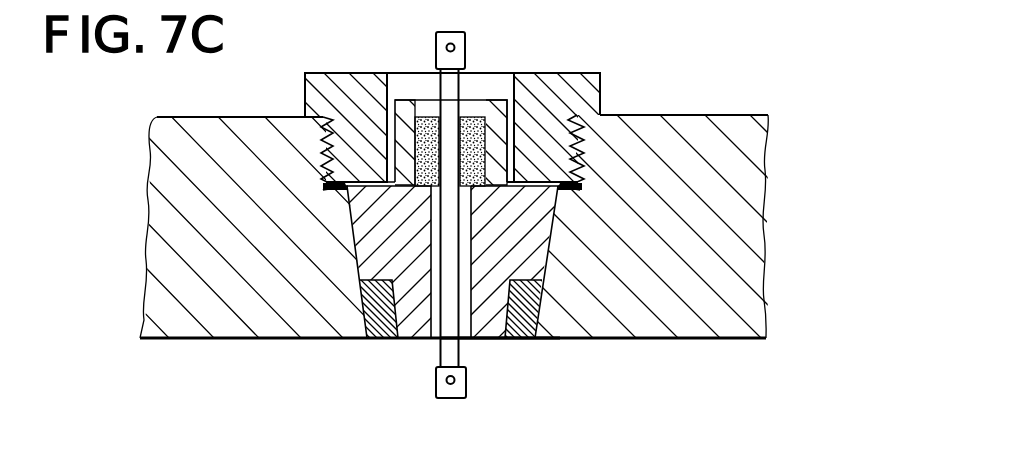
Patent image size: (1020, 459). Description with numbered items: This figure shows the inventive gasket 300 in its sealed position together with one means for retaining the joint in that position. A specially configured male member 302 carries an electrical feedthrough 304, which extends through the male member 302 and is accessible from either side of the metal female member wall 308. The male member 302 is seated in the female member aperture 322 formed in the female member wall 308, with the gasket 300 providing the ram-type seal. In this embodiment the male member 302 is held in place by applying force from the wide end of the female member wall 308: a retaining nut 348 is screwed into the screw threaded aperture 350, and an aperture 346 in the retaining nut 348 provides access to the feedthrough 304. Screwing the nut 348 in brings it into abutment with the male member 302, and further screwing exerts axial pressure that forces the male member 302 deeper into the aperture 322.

The retaining nut 348 is at (327, 72).
The aperture 346 is at (402, 78).
The electrical feedthrough 304 is at (458, 36).
The screw threaded aperture 350 is at (565, 186).
The female member wall 308 is at (247, 335).
The gasket 300 is at (376, 339).
The male member 302 is at (423, 335).
The female member aperture 322 is at (497, 357).